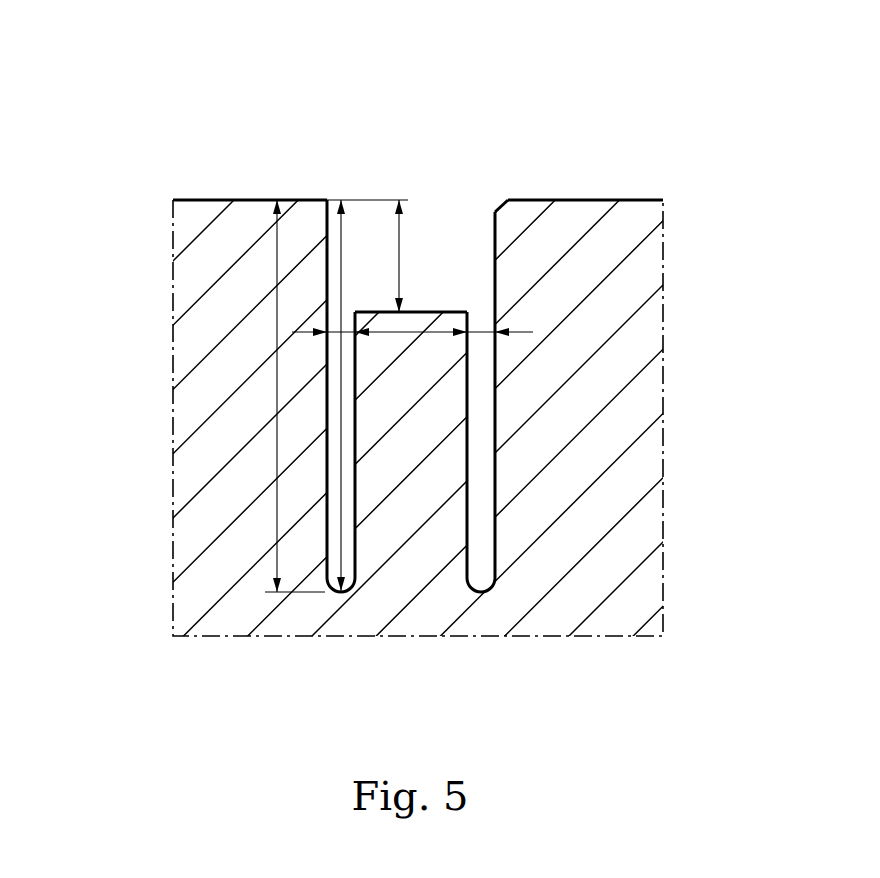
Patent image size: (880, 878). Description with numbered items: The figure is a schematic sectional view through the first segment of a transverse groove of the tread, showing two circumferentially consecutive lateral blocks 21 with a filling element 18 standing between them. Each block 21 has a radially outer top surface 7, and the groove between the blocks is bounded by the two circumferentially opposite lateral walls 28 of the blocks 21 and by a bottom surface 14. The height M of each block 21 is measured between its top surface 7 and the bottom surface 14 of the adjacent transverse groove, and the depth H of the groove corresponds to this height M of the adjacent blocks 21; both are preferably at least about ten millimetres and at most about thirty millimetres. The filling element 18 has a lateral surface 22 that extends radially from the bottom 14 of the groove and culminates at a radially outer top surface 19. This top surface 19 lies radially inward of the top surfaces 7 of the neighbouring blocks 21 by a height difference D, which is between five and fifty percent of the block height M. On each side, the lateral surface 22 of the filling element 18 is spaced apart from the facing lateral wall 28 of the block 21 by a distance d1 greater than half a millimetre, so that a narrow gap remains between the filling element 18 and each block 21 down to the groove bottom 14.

The top surface 7 is at (193, 199).
The lateral block 21 is at (243, 190).
The lateral wall 28 is at (333, 399).
The bottom surface 14 is at (342, 593).
The top surface 19 is at (430, 311).
The filling element 18 is at (432, 469).
The lateral surface 22 is at (482, 528).
The depth H is at (340, 350).
The height difference D is at (407, 253).
The distance d1 is at (483, 331).
The height M is at (277, 447).